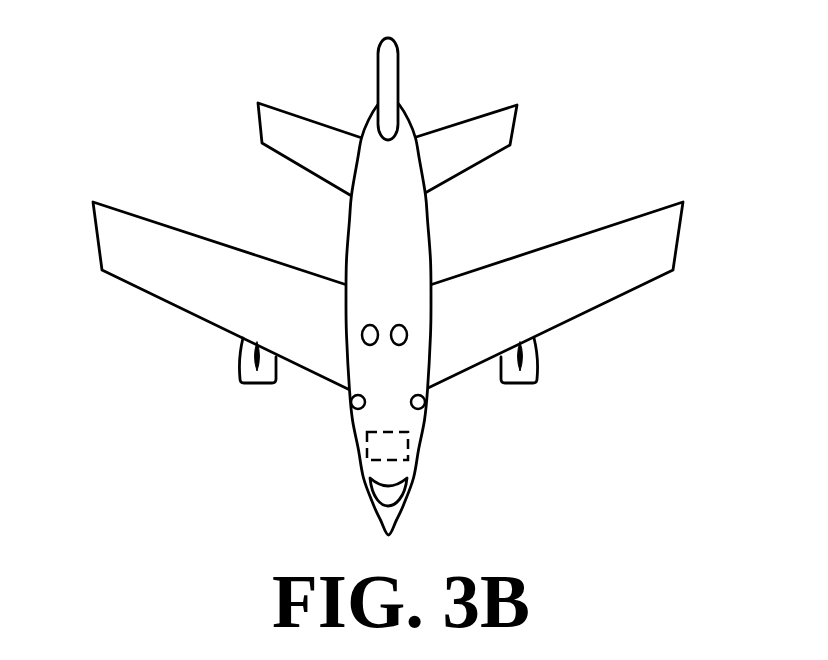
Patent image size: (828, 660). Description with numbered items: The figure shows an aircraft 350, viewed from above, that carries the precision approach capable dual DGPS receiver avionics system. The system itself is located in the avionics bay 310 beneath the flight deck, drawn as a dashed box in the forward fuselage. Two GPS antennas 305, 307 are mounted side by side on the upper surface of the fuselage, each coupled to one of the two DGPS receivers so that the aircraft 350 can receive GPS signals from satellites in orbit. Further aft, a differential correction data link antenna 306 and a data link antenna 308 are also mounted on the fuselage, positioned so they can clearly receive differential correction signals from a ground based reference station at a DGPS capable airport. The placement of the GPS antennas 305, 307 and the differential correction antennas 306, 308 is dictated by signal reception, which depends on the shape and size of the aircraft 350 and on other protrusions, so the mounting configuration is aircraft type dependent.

The aircraft 350 is at (225, 49).
The GPS antenna 305 is at (362, 329).
The GPS antenna 307 is at (407, 329).
The differential correction antenna 306 is at (352, 407).
The differential correction antenna 308 is at (425, 406).
The avionics bay 310 is at (370, 452).